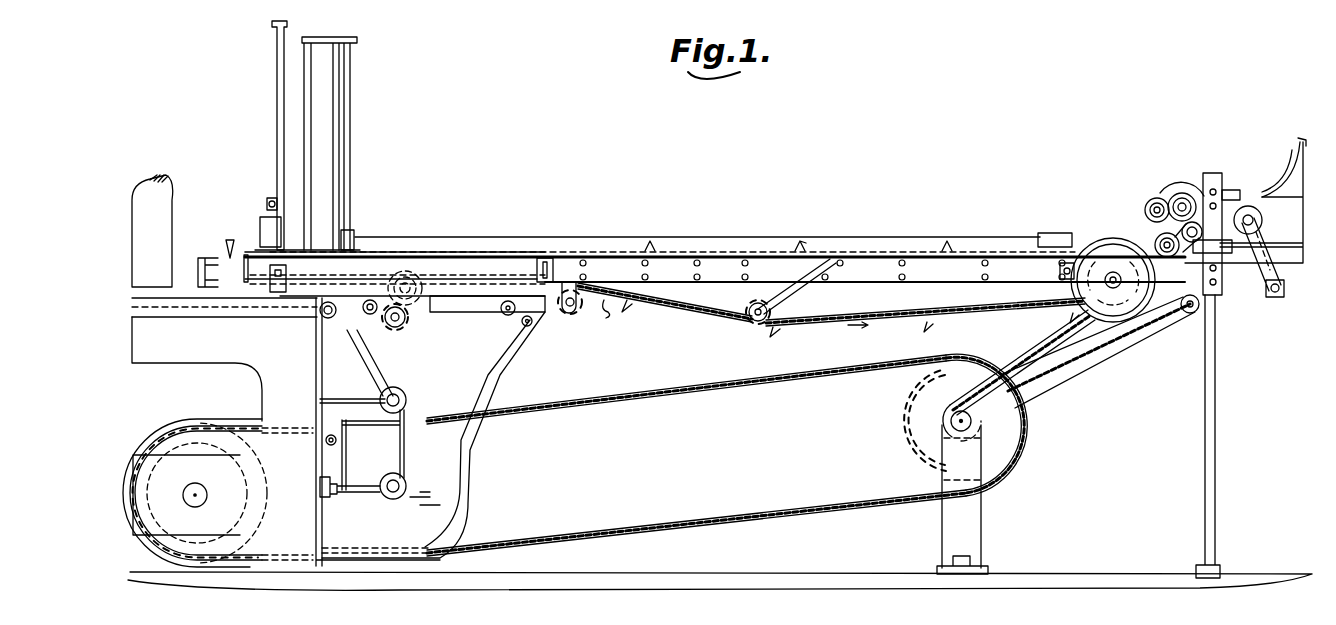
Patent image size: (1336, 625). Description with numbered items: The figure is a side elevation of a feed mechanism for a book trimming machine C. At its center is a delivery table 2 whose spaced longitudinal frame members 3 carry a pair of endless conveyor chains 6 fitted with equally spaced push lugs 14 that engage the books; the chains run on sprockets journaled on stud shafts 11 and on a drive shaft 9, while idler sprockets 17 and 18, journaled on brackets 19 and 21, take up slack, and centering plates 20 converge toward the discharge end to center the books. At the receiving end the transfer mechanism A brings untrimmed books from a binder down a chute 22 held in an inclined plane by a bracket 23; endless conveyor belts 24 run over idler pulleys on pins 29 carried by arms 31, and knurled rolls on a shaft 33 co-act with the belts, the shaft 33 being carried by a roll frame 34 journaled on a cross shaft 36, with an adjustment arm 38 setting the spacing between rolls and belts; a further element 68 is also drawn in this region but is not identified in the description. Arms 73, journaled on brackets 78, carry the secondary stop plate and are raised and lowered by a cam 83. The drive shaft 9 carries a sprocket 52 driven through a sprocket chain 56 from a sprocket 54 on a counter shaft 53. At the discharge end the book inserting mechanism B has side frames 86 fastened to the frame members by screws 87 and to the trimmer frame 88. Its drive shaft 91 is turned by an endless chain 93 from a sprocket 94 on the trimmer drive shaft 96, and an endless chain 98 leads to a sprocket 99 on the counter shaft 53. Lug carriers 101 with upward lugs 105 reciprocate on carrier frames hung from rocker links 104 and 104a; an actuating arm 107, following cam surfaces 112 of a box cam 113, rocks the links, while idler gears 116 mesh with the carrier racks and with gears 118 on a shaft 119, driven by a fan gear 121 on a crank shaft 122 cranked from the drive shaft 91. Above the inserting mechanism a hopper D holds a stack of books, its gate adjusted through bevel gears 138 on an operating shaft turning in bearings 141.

The delivery table 2 is at (722, 238).
The frame members 3 is at (932, 283).
The endless conveyor chains 6 is at (728, 318).
The drive shaft 9 is at (1180, 302).
The stud shafts 11 is at (283, 270).
The push lugs 14 is at (652, 240).
The idler sprockets 17 is at (576, 316).
The idler sprockets 18 is at (748, 308).
The brackets 19 is at (610, 318).
The centering plates 20 is at (770, 240).
The brackets 21 is at (800, 290).
The chute 22 is at (1288, 168).
The bracket 23 is at (1303, 144).
The endless conveyor belts 24 is at (1252, 207).
The pins 29 is at (1263, 222).
The arms 31 is at (1276, 247).
The shaft 33 is at (1148, 200).
The roll frame 34 is at (1170, 194).
The cross shaft 36 is at (1224, 190).
The adjustment arm 38 is at (1213, 172).
The sprocket 52 is at (1183, 312).
The counter shaft 53 is at (957, 425).
The sprocket 54 is at (972, 410).
The sprocket chain 56 is at (1094, 366).
The roller 68 is at (1182, 226).
The arms 73 is at (1050, 233).
The brackets 78 is at (1157, 238).
The cam 83 is at (1106, 314).
The side frames 86 is at (507, 381).
The screws 87 is at (562, 264).
The frame 88 is at (210, 362).
The drive shaft 91 is at (392, 494).
The endless chain 93 is at (246, 425).
The sprocket 94 is at (182, 425).
The trimmer drive shaft 96 is at (190, 484).
The endless chain 98 is at (716, 516).
The sprocket 99 is at (896, 405).
The lug carriers 101 is at (246, 298).
The rocker link 104 is at (358, 262).
The rocker link 104a is at (508, 280).
The lug 105 is at (240, 257).
The actuating arm 107 is at (340, 358).
The cam surfaces 112 is at (432, 497).
The box cam 113 is at (442, 517).
The idler gears 116 is at (400, 268).
The gears 118 is at (418, 333).
The shaft 119 is at (412, 307).
The fan gear 121 is at (408, 353).
The crank shaft 122 is at (408, 385).
The bevel gears 138 is at (276, 196).
The bearings 141 is at (270, 200).
The transfer mechanism A is at (1178, 165).
The book inserting mechanism B is at (448, 277).
The book trimming machine C is at (293, 541).
The hopper D is at (356, 129).